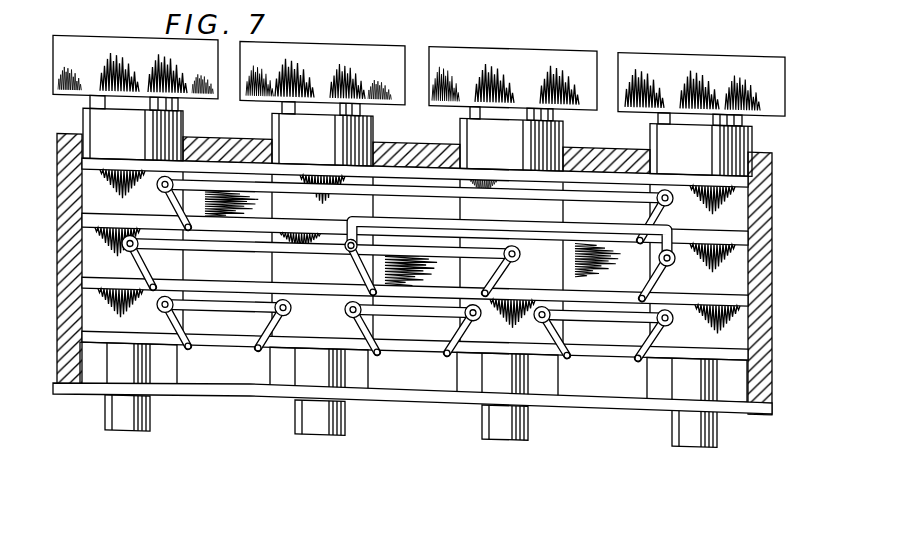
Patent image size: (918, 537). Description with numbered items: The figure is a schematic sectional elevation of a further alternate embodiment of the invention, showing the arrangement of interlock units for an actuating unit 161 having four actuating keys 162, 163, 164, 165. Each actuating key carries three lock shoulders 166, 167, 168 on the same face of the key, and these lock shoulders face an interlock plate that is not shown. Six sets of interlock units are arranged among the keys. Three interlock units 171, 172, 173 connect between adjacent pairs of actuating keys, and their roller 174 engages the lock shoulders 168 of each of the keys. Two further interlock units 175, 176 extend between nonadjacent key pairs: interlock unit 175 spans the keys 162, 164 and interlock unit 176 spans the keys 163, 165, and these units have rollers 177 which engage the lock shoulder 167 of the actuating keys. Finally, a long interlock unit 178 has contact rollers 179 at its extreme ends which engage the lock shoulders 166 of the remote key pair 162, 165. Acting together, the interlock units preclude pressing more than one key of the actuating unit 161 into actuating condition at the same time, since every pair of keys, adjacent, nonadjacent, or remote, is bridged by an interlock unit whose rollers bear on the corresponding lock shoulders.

The actuating unit 161 is at (773, 187).
The actuating key 162 is at (678, 155).
The actuating key 163 is at (487, 152).
The actuating key 164 is at (318, 145).
The actuating key 165 is at (121, 138).
The lock shoulder 166 is at (735, 193).
The lock shoulder 167 is at (735, 252).
The lock shoulder 168 is at (735, 307).
The interlock unit 171 is at (636, 348).
The interlock unit 172 is at (437, 343).
The interlock unit 173 is at (252, 350).
The roller 174 is at (292, 310).
The interlock unit 175 is at (543, 222).
The interlock unit 176 is at (287, 252).
The roller 177 is at (128, 247).
The interlock unit 178 is at (397, 195).
The contact roller 179 is at (163, 189).